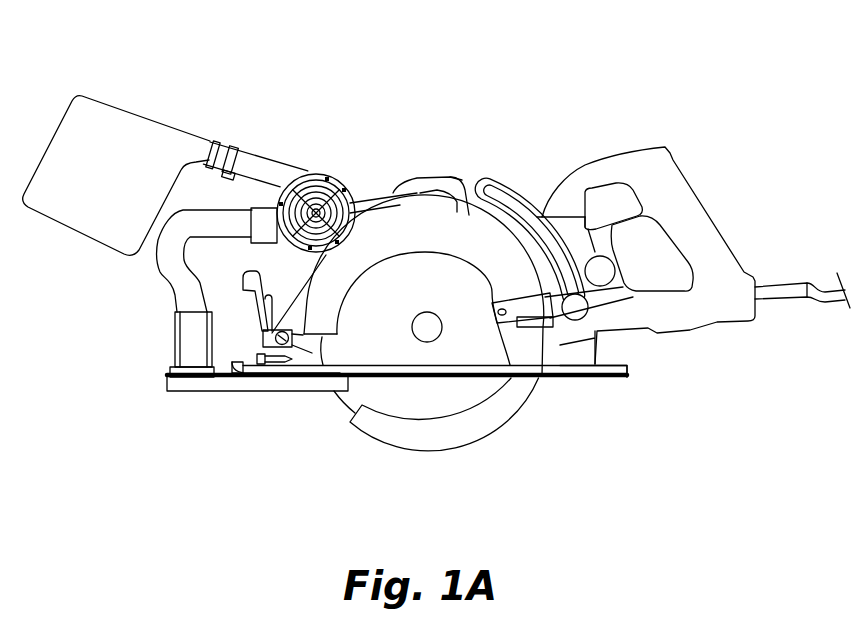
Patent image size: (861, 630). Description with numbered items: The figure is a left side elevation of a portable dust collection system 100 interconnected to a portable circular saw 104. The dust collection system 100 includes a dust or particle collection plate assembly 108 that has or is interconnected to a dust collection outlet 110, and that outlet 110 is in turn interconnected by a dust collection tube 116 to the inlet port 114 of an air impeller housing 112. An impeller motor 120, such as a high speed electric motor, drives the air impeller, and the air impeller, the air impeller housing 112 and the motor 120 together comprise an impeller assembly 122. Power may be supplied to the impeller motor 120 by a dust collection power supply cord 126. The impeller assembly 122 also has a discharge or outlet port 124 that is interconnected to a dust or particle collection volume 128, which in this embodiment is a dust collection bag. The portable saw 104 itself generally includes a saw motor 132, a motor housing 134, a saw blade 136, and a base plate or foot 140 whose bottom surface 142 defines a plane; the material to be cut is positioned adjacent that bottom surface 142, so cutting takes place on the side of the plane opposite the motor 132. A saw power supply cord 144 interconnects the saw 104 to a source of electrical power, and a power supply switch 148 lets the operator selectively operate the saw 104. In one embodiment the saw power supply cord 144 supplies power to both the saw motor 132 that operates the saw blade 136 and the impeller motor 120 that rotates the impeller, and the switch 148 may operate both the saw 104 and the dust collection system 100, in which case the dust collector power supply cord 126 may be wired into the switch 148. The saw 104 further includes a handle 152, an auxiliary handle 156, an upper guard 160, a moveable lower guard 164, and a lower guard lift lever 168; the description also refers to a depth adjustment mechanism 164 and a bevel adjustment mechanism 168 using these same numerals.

The portable dust collection system 100 is at (318, 122).
The portable circular saw 104 is at (470, 170).
The dust collection plate assembly 108 is at (230, 392).
The dust collection outlet 110 is at (173, 343).
The air impeller housing 112 is at (339, 169).
The inlet port 114 is at (253, 207).
The dust collection tube 116 is at (166, 271).
The impeller motor 120 is at (296, 160).
The impeller assembly 122 is at (355, 180).
The discharge port 124 is at (250, 143).
The dust collection power supply cord 126 is at (394, 191).
The dust collection volume 128 is at (80, 96).
The saw motor 132 is at (568, 224).
The motor housing 134 is at (600, 217).
The saw blade 136 is at (350, 408).
The base plate 140 is at (578, 374).
The bottom surface 142 is at (621, 377).
The saw power supply cord 144 is at (810, 300).
The power supply switch 148 is at (642, 208).
The handle 152 is at (703, 202).
The auxiliary handle 156 is at (451, 176).
The upper guard 160 is at (540, 216).
The moveable lower guard 164 is at (428, 449).
The lower guard lift lever 168 is at (536, 328).